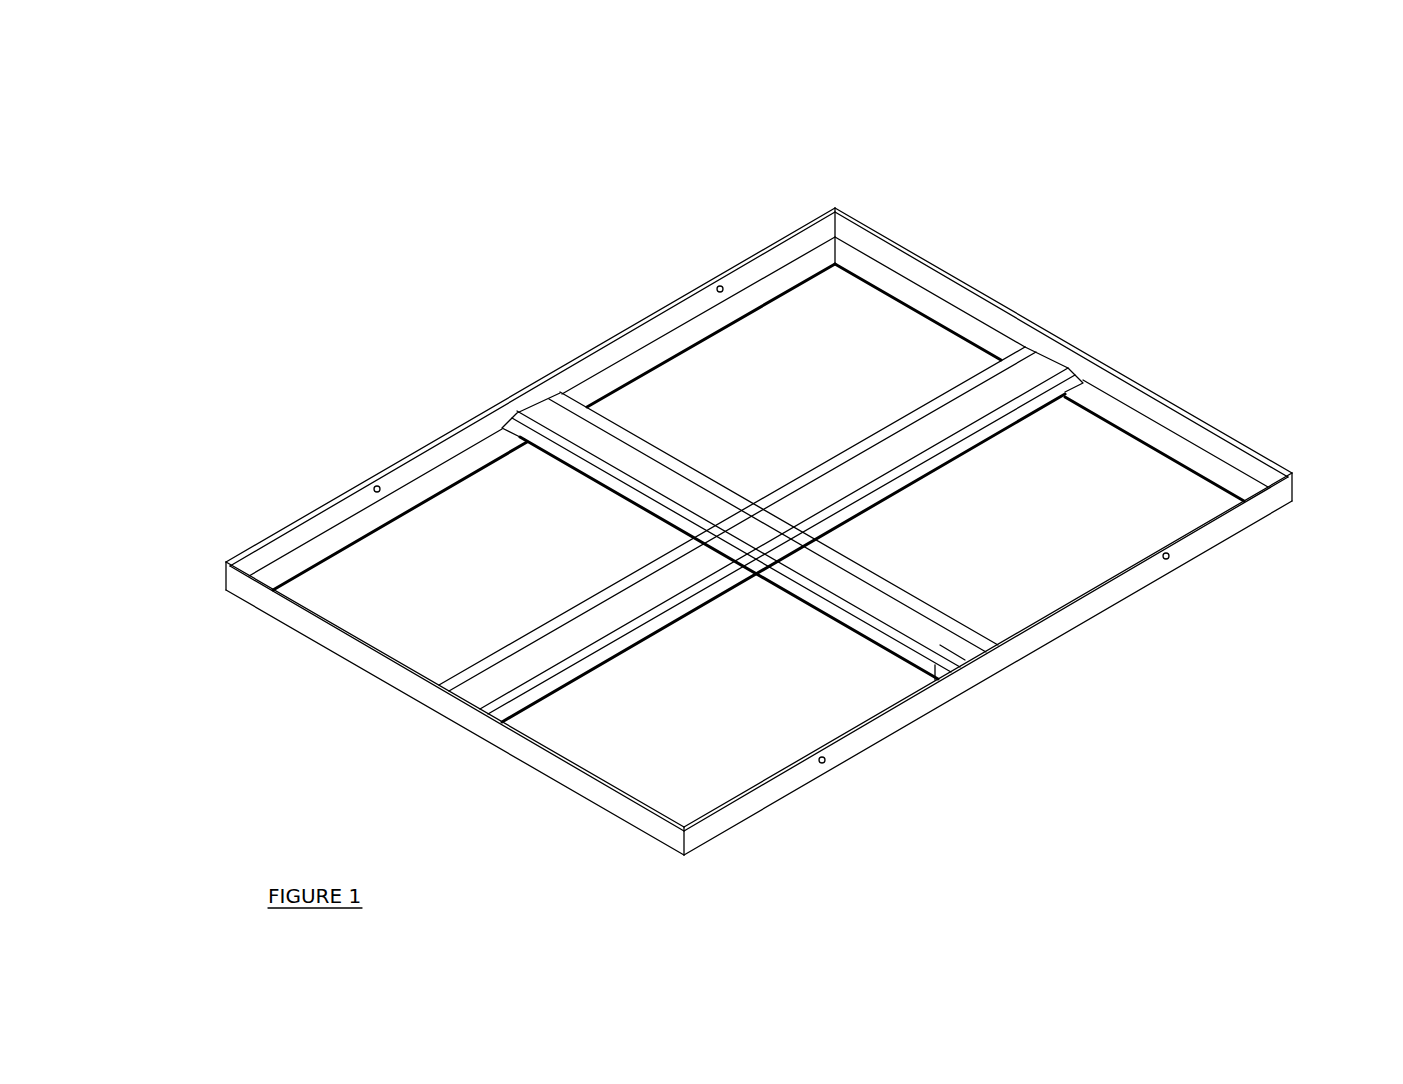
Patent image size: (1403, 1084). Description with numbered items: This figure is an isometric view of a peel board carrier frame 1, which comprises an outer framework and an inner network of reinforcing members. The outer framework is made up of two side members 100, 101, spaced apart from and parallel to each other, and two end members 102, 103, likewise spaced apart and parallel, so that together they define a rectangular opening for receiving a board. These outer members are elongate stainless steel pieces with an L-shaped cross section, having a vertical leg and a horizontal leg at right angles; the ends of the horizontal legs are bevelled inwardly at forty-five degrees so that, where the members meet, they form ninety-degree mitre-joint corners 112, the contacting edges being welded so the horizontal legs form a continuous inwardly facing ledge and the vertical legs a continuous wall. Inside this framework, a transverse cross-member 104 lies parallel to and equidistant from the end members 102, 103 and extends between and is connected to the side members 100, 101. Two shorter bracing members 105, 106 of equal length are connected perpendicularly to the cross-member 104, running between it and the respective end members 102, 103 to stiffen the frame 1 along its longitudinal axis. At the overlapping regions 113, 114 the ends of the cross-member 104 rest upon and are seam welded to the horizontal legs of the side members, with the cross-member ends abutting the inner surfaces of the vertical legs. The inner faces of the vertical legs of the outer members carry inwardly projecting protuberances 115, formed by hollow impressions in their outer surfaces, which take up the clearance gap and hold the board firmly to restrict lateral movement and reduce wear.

The peel board carrier frame 1 is at (770, 526).
The side member 100 is at (438, 457).
The side member 101 is at (1090, 607).
The end member 102 is at (600, 795).
The end member 103 is at (1210, 425).
The cross-member 104 is at (953, 652).
The bracing member 105 is at (485, 690).
The bracing member 106 is at (1033, 373).
The mitre-joint corner 112 is at (770, 526).
The overlapping region 113 is at (511, 384).
The overlapping region 114 is at (964, 720).
The protuberance 115 is at (372, 486).